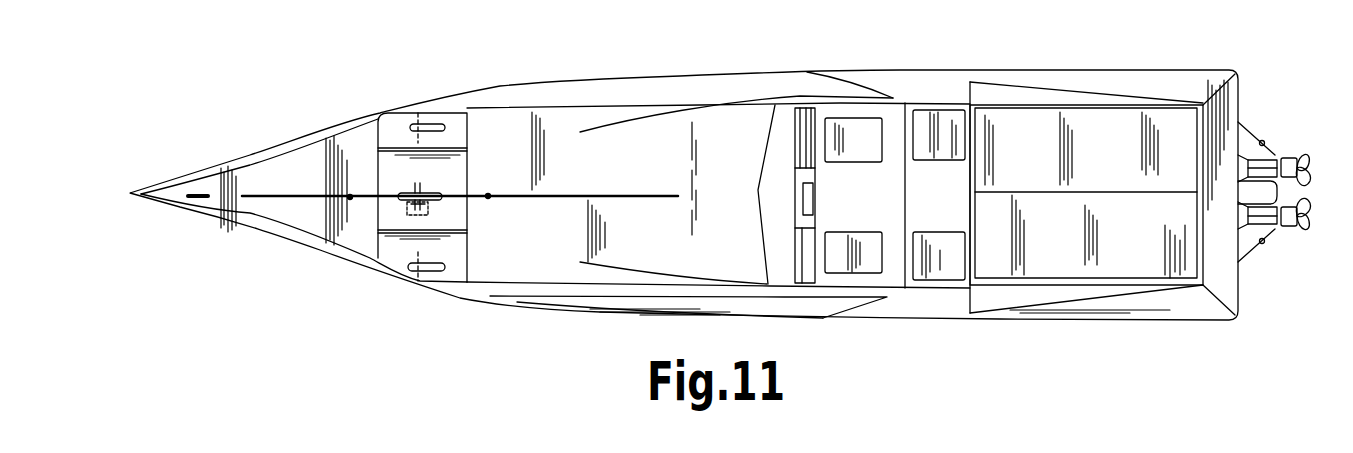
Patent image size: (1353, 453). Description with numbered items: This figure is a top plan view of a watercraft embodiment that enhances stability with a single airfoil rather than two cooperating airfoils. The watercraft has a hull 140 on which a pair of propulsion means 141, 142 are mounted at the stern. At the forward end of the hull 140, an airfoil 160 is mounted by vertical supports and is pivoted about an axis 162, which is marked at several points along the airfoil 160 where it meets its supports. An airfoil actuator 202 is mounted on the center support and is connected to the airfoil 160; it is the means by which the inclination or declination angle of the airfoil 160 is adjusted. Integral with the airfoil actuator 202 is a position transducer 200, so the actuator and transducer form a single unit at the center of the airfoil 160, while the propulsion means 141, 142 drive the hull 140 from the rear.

The hull 140 is at (802, 63).
The propulsion means 141 is at (1315, 162).
The propulsion means 142 is at (1317, 210).
The airfoil 160 is at (457, 274).
The axis 162 is at (418, 122).
The position transducer 200 is at (475, 218).
The airfoil actuator 202 is at (428, 208).